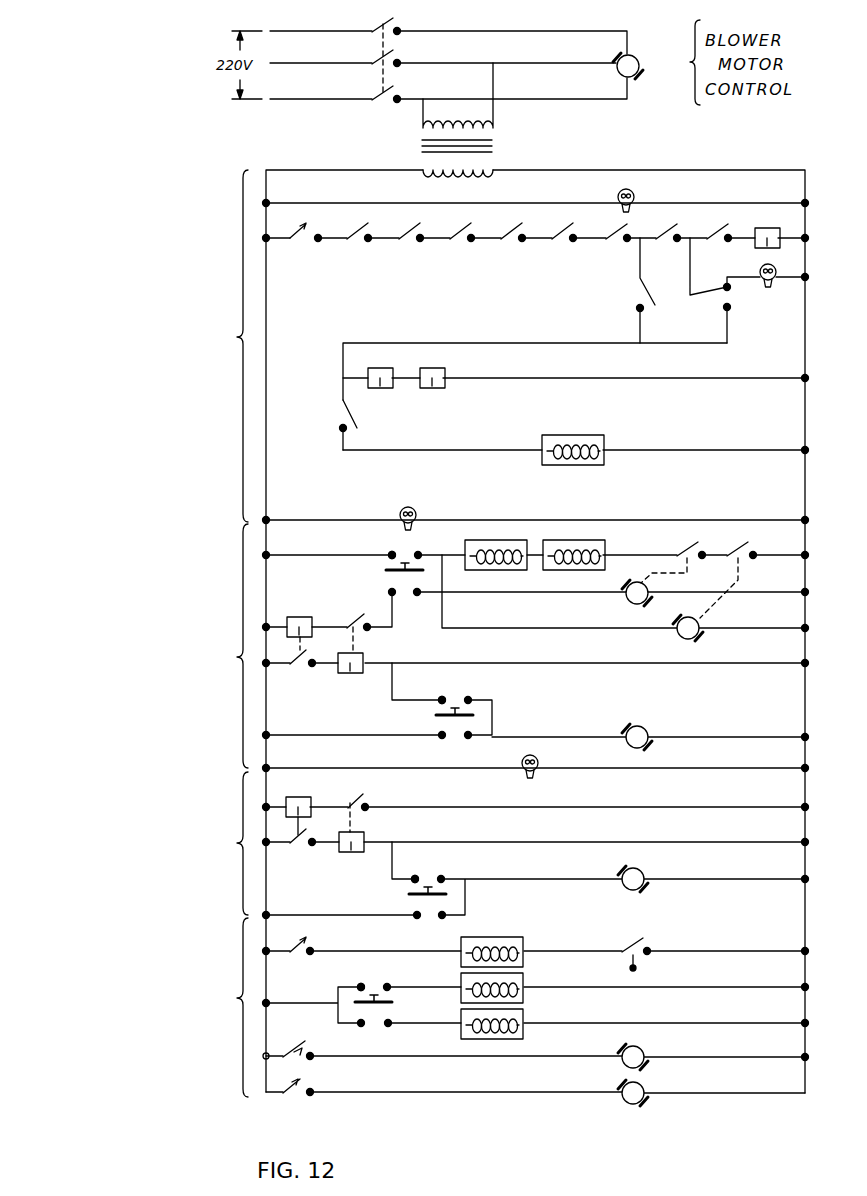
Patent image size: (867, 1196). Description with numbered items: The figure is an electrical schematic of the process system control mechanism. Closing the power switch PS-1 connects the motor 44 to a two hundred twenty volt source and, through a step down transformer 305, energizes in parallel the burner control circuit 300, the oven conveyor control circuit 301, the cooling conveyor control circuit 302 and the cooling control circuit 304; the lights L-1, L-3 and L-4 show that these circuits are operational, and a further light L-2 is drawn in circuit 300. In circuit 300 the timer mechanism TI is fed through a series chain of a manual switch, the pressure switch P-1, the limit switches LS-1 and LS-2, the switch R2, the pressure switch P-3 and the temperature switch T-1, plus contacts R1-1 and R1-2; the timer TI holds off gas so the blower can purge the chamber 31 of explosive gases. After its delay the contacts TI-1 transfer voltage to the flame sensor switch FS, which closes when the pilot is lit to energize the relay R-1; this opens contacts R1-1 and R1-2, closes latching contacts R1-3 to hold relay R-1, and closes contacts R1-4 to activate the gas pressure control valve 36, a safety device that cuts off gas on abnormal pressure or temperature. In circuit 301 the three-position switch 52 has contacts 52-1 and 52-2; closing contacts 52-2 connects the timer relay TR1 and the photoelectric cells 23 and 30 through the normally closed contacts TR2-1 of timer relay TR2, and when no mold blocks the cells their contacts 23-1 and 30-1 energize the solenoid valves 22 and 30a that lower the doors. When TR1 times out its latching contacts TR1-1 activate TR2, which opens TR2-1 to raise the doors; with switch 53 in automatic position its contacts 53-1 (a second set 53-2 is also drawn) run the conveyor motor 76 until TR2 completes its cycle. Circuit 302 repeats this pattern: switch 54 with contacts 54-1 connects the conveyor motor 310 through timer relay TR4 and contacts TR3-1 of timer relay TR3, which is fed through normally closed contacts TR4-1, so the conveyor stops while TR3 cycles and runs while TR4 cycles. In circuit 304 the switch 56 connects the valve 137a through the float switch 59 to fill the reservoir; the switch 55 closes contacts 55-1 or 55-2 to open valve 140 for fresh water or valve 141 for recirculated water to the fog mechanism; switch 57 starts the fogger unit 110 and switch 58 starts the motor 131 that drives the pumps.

The power switch PS-1 is at (382, 23).
The motor 44 is at (641, 75).
The step down transformer 305 is at (495, 155).
The heating chamber 31 is at (302, 246).
The pressure activated switch P-1 is at (349, 244).
The limit switch LS-1 is at (401, 244).
The limit switch LS-2 is at (452, 244).
The relay contact R2 is at (503, 244).
The pressure actuated switch P-3 is at (559, 244).
The temperature actuated switch T-1 is at (612, 232).
The relay contacts R1-1 is at (671, 235).
The relay contacts R1-2 is at (726, 234).
The timer mechanism TI is at (769, 229).
The light L-1 is at (618, 197).
The indicator lamp L-2 is at (775, 267).
The latching contacts R1-3 is at (643, 292).
The timer contacts TI-1 is at (730, 298).
The flame sensor switch FS is at (383, 376).
The relay R-1 is at (432, 376).
The relay contacts R1-4 is at (357, 421).
The gas pressure control valve 36 is at (600, 440).
The light L-3 is at (418, 516).
The burner control circuit 300 is at (238, 337).
The switch 52 contact 52-1 is at (390, 553).
The three-position switch 52 is at (385, 572).
The switch contacts 52-2 is at (398, 608).
The solenoid valve 22 is at (463, 550).
The solenoid valve 30a is at (603, 553).
The photocell contacts 23-1 is at (673, 557).
The photocell contacts 30-1 is at (728, 575).
The photoelectric cell 23 is at (628, 603).
The photoelectric cell 30 is at (679, 638).
The timer relay TR1 is at (292, 622).
The normally closed contacts TR2-1 is at (362, 622).
The latching contacts TR1-1 is at (300, 670).
The timer relay TR2 is at (362, 673).
The switch contacts 53-1 is at (470, 698).
The three-position manual switch 53 is at (436, 714).
The switch 53 contact 53-2 is at (446, 739).
The motor 76 is at (648, 728).
The light L-4 is at (540, 763).
The oven conveyor control circuit 301 is at (238, 657).
The timer relay TR3 is at (292, 806).
The normally closed contacts TR4-1 is at (366, 804).
The relay contacts TR3-1 is at (321, 853).
The timer relay TR4 is at (352, 855).
The switch contacts 54-1 is at (418, 877).
The three-position manual switch 54 is at (410, 895).
The motor 310 is at (645, 878).
The cooling conveyor control circuit 302 is at (238, 843).
The manual switch 56 is at (314, 941).
The valve 137a is at (495, 941).
The float switch 59 is at (633, 945).
The switch contacts 55-1 is at (385, 984).
The three-position manual switch 55 is at (394, 1003).
The switch contacts 55-2 is at (374, 1026).
The valve 140 is at (522, 983).
The valve 141 is at (522, 1019).
The switch 57 is at (300, 1044).
The switch 58 is at (309, 1083).
The fogger unit 110 is at (645, 1056).
The motor 131 is at (646, 1091).
The cooling control circuit 304 is at (238, 998).